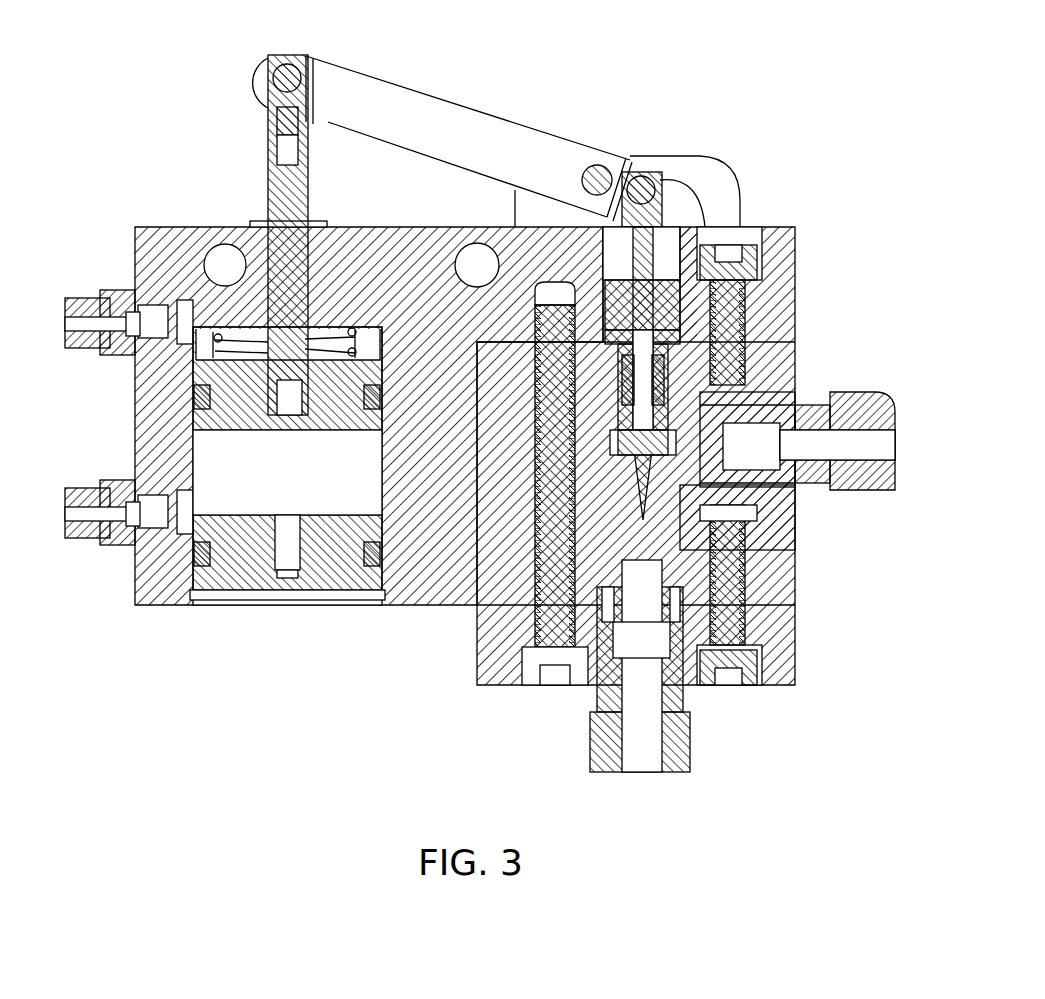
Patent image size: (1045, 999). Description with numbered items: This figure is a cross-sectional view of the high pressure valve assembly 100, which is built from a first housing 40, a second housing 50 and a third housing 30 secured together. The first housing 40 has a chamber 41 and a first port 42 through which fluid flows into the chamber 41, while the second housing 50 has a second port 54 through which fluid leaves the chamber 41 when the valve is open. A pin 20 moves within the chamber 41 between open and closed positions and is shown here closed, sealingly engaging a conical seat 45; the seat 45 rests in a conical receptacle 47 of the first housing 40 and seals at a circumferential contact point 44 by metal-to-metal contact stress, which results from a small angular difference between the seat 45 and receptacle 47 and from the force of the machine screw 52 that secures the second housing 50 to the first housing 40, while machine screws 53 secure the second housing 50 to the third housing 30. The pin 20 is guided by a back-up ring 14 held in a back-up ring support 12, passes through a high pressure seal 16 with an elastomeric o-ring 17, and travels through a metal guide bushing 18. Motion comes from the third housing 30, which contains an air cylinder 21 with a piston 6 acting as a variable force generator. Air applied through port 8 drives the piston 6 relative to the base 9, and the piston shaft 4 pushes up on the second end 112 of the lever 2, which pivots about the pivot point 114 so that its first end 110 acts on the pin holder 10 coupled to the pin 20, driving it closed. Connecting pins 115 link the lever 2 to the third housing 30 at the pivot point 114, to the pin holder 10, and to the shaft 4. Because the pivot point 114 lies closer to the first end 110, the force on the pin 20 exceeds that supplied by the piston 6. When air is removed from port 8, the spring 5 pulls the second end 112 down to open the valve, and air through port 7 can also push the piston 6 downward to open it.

The high pressure valve assembly 100 is at (485, 421).
The lever 2 is at (420, 95).
The shaft 4 is at (280, 200).
The spring 5 is at (200, 345).
The piston 6 is at (195, 405).
The port 7 is at (80, 318).
The port 8 is at (80, 508).
The base 9 is at (215, 598).
The pin holder 10 is at (670, 215).
The back-up ring support 12 is at (755, 268).
The back-up ring 14 is at (720, 322).
The high pressure seal 16 is at (700, 330).
The elastomeric o-ring 17 is at (710, 365).
The metal guide bushing 18 is at (700, 385).
The pin 20 is at (800, 425).
The air cylinder 21 is at (215, 490).
The third housing 30 is at (413, 560).
The first housing 40 is at (455, 560).
The chamber 41 is at (880, 480).
The first port 42 is at (875, 405).
The circumferential contact point 44 is at (690, 490).
The seat 45 is at (735, 520).
The conical receptacle 47 is at (555, 570).
The second housing 50 is at (480, 645).
The machine screw 52 is at (730, 680).
The machine screws 53 is at (575, 690).
The second port 54 is at (660, 745).
The first end 110 is at (660, 185).
The second end 112 is at (270, 62).
The pivot point 114 is at (640, 185).
The connecting pins 115 is at (300, 65).